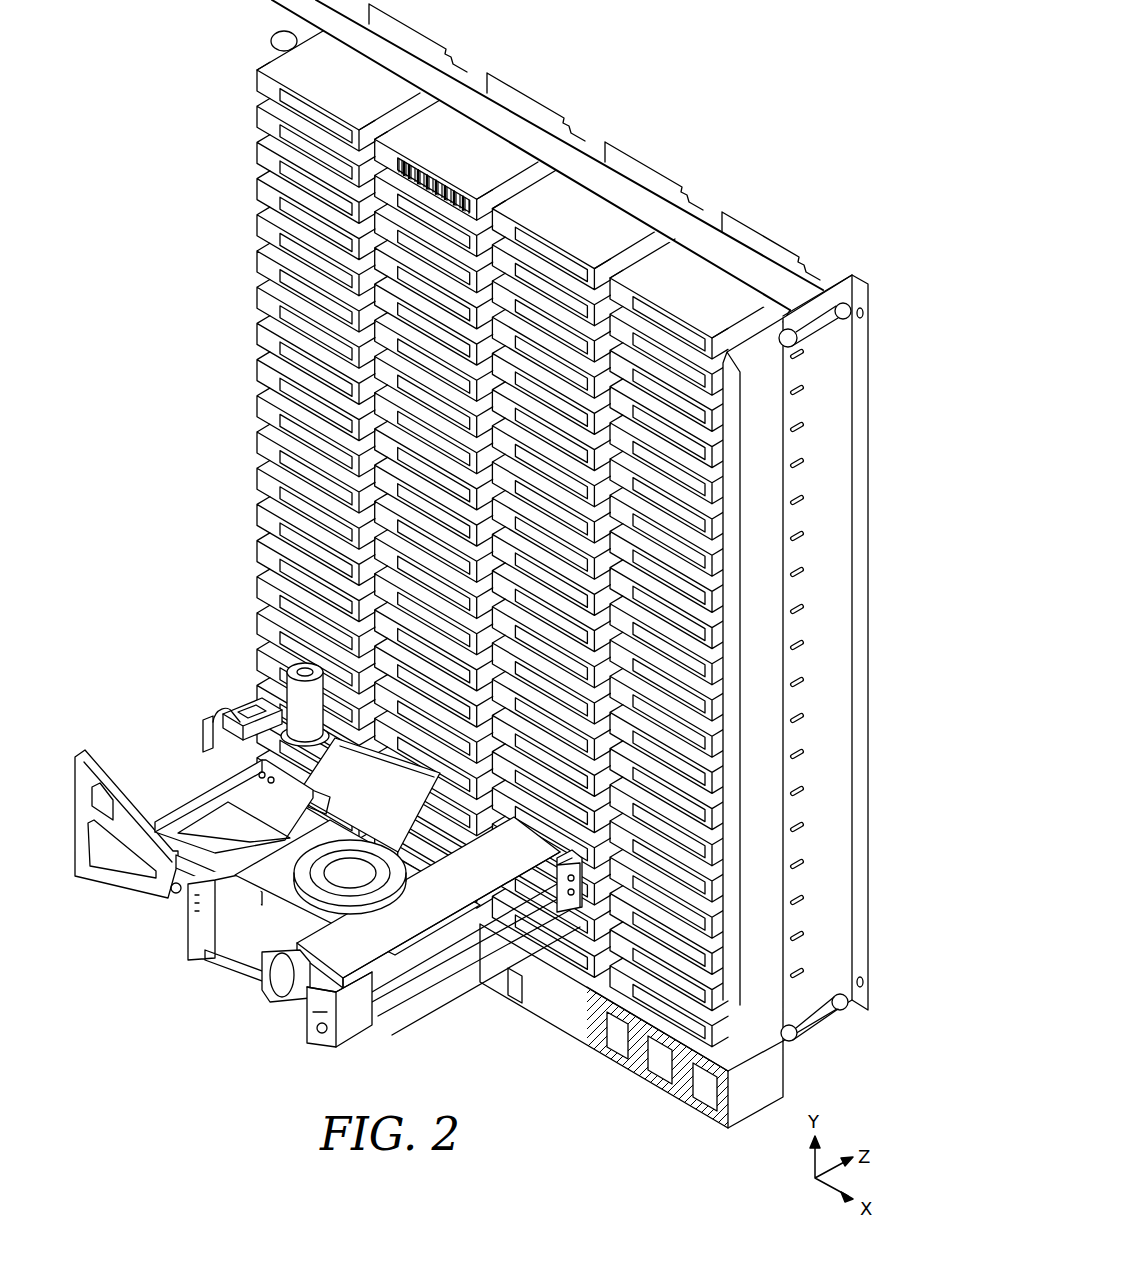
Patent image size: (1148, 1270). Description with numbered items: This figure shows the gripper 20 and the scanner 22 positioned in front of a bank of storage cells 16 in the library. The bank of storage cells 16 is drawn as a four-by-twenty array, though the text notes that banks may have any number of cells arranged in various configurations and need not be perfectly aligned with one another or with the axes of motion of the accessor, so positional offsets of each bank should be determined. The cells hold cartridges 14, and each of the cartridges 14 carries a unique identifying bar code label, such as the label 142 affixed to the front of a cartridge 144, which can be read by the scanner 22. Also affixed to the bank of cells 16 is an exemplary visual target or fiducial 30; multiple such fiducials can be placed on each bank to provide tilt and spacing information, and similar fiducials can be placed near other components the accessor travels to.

The cartridges 14 is at (225, 120).
The bank of storage cells 16 is at (830, 378).
The gripper 20 is at (353, 943).
The scanner 22 is at (262, 763).
The fiducial 30 is at (645, 1112).
The bar code label 142 is at (443, 163).
The cartridge 144 is at (517, 101).